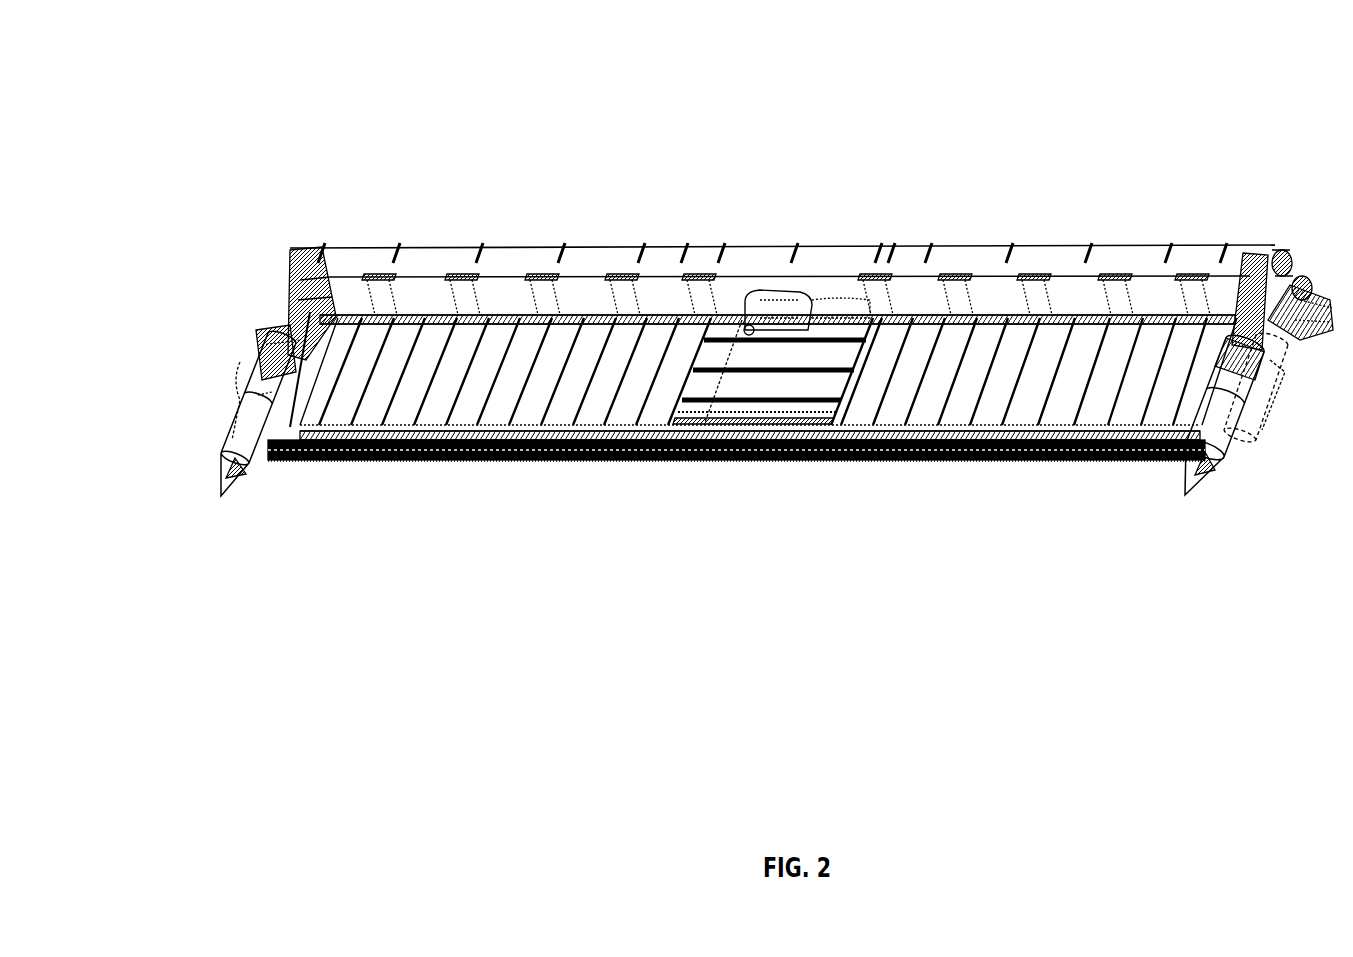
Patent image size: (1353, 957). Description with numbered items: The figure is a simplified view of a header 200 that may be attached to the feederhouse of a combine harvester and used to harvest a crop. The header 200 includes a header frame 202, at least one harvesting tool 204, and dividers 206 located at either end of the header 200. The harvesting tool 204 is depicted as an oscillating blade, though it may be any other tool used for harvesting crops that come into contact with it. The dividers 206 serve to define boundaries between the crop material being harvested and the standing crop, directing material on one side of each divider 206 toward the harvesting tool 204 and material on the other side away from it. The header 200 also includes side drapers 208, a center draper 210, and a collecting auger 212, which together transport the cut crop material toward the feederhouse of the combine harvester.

The header 200 is at (950, 113).
The header frame 202 is at (607, 247).
The harvesting tool 204 is at (523, 462).
The dividers 206 is at (238, 412).
The side drapers 208 is at (957, 412).
The center draper 210 is at (782, 380).
The collecting auger 212 is at (763, 300).